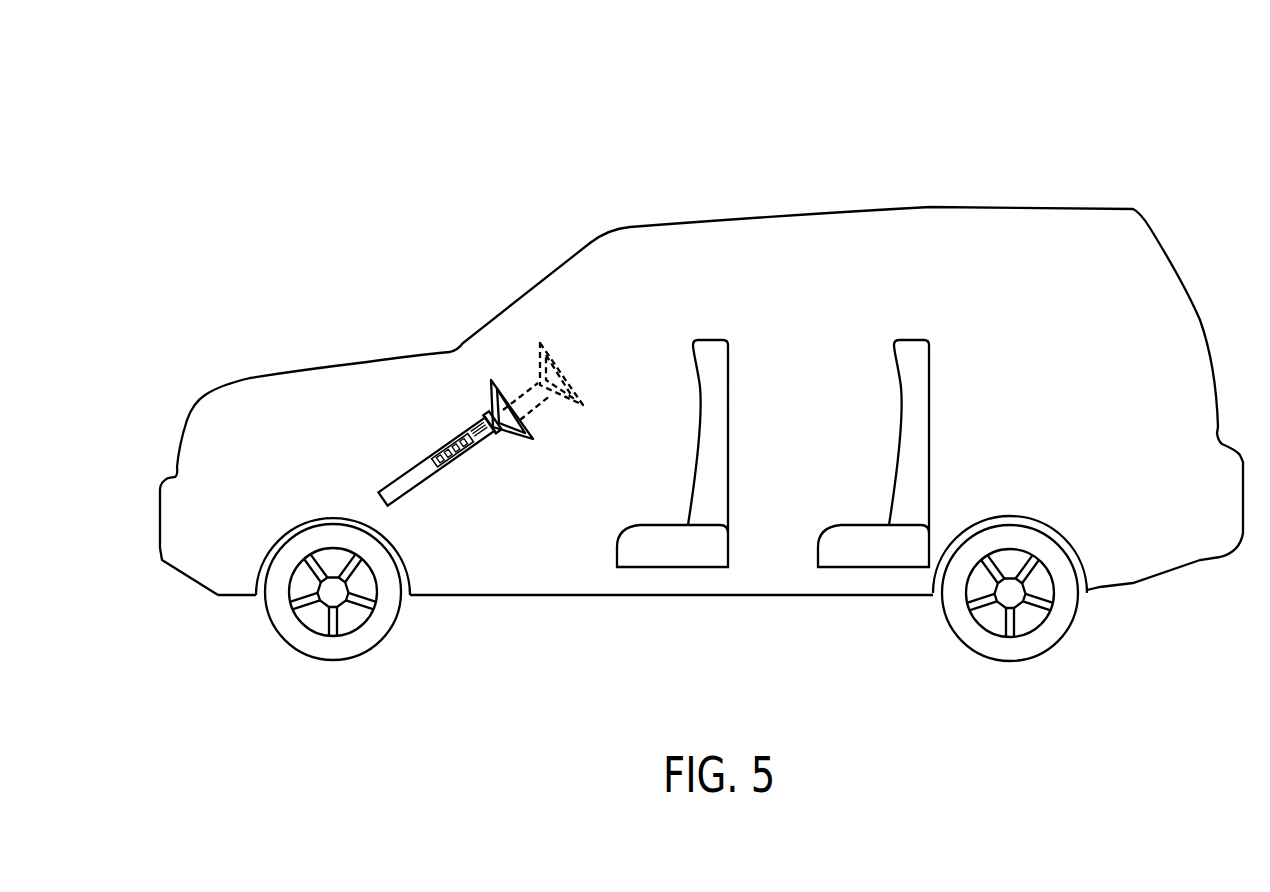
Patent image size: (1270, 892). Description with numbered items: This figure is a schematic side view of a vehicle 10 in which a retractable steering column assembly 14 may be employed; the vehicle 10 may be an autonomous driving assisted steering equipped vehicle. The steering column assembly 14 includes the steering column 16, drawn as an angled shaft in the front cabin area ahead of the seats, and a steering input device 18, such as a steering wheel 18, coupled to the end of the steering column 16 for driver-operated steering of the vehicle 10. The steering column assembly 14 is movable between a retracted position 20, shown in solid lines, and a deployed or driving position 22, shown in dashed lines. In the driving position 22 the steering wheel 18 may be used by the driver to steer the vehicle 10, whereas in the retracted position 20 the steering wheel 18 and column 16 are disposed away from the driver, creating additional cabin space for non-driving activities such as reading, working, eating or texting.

The vehicle 10 is at (1181, 142).
The steering column assembly 14 is at (435, 410).
The steering column 16 is at (407, 467).
The steering input device 18 is at (504, 380).
The retracted position 20 is at (497, 347).
The driving position 22 is at (600, 369).